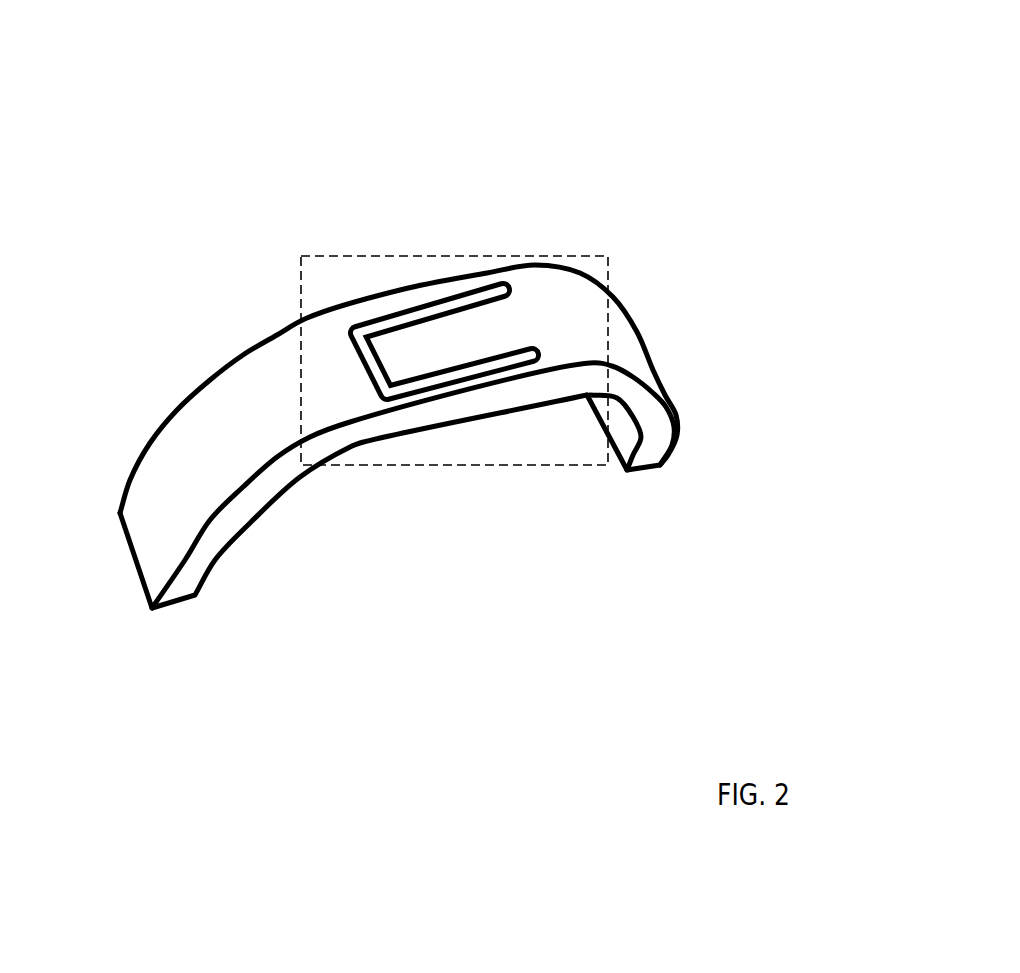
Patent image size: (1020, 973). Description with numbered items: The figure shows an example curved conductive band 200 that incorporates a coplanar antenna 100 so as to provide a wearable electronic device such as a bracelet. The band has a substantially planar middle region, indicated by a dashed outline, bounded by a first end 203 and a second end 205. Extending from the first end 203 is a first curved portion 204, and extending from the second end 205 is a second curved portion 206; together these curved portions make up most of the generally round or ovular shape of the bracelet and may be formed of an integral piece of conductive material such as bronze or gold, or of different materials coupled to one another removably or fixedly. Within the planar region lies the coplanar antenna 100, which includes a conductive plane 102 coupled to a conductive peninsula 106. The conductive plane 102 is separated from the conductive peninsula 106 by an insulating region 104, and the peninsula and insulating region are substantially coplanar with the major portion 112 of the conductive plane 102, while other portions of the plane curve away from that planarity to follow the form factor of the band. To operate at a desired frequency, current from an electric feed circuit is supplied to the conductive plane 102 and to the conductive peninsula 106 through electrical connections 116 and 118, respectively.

The curved conductive band 200 is at (718, 53).
The coplanar antenna 100 is at (403, 391).
The conductive plane 102 is at (317, 365).
The insulating region 104 is at (522, 285).
The conductive peninsula 106 is at (511, 328).
The major portion 112 is at (376, 294).
The electrical connection 116 is at (328, 344).
The electrical connection 118 is at (423, 344).
The first end 203 is at (292, 382).
The first curved portion 204 is at (229, 445).
The second end 205 is at (616, 340).
The second curved portion 206 is at (663, 421).